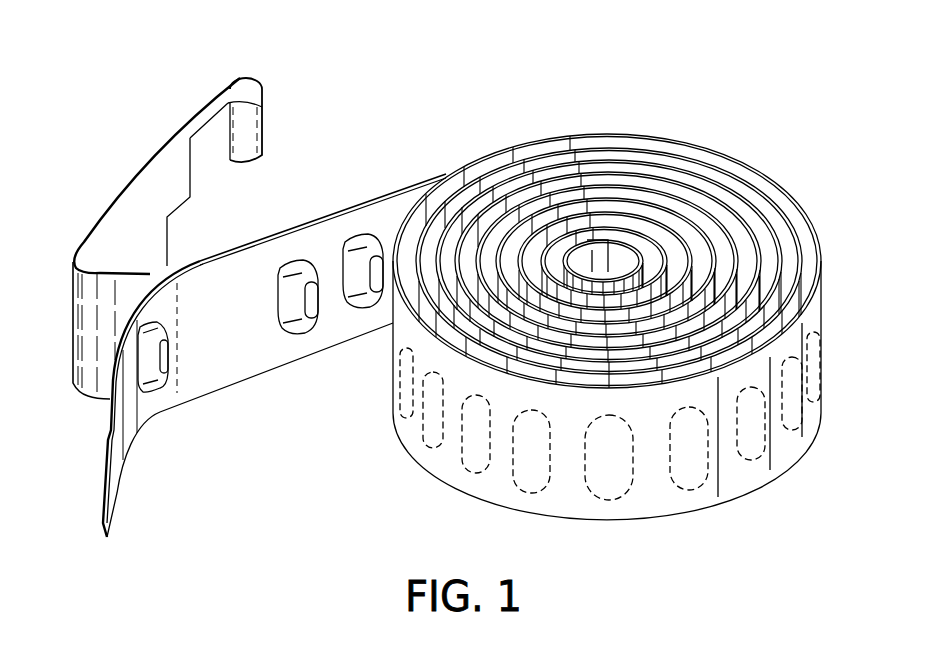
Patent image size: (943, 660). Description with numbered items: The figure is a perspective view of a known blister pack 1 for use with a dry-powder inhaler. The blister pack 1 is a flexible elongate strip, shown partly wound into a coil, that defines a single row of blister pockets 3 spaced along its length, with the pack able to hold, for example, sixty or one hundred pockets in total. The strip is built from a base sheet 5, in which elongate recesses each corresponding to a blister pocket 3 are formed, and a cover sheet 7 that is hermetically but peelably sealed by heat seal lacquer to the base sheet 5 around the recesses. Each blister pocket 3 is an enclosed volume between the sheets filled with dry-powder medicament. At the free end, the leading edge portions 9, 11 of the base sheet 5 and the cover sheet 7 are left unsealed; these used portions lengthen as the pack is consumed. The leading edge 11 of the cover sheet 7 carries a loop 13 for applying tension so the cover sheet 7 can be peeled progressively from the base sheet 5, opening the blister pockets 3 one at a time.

The blister pack 1 is at (735, 113).
The blister pocket 3 is at (290, 264).
The base sheet 5 is at (276, 357).
The cover sheet 7 is at (784, 449).
The leading edge portion of the base sheet 9 is at (128, 433).
The leading edge portion of the cover sheet 11 is at (142, 192).
The loop 13 is at (248, 83).